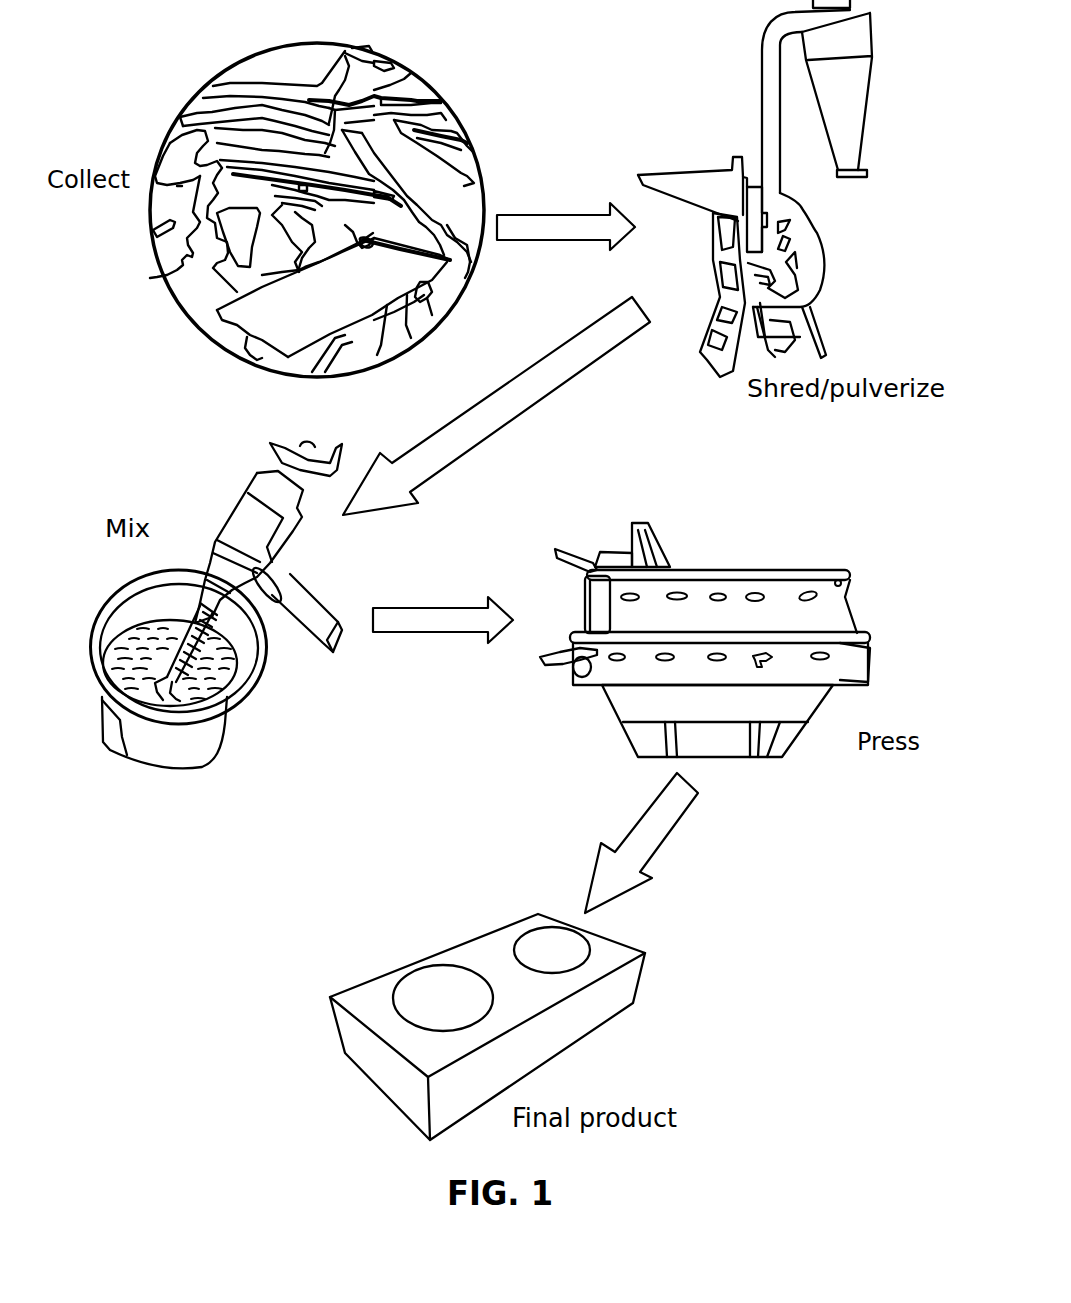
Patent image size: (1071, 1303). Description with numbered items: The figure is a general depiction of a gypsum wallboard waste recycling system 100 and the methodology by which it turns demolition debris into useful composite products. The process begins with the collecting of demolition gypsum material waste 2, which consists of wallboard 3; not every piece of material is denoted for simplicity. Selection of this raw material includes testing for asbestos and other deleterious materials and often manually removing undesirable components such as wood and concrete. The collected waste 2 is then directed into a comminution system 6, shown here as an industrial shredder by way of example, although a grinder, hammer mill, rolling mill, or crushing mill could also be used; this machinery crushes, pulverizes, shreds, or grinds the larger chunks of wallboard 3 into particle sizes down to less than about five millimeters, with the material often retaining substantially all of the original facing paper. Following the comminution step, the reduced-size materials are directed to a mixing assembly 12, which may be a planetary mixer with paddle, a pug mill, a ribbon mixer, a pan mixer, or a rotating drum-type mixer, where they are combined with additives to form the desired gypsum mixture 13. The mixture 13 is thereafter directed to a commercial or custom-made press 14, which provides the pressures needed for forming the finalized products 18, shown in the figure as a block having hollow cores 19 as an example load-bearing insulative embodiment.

The gypsum wallboard waste recycling system 100 is at (203, 41).
The demolition gypsum material waste 2 is at (167, 278).
The wallboard 3 is at (302, 75).
The comminution system 6 is at (692, 168).
The mixing assembly 12 is at (225, 713).
The gypsum mixture 13 is at (137, 654).
The press 14 is at (612, 706).
The finalized products 18 is at (534, 1003).
The hollow cores 19 is at (545, 953).